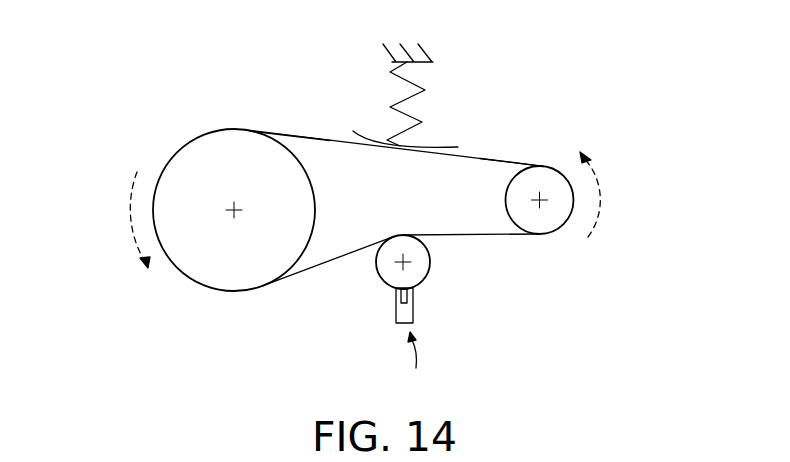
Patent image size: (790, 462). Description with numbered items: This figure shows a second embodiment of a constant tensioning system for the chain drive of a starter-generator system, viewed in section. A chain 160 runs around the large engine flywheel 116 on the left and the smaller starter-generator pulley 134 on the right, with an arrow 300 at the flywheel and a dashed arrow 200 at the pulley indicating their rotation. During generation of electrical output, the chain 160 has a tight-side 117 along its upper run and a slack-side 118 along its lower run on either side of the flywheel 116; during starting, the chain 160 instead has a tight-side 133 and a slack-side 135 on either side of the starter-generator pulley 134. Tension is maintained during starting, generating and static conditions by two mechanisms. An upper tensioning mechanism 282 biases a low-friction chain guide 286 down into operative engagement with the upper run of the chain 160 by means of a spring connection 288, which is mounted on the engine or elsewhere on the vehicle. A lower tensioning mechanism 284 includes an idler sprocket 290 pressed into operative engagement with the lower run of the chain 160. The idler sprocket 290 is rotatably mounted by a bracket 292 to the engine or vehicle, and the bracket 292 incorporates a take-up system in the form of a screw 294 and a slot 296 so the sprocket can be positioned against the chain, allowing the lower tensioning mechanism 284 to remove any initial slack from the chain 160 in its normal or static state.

The flywheel 116 is at (197, 164).
The tight-side 117 is at (290, 135).
The slack-side 118 is at (295, 283).
The chain 160 is at (338, 141).
The tight-side 133 is at (515, 236).
The starter-generator pulley 134 is at (550, 215).
The slack-side 135 is at (513, 160).
The pulley rotation direction 200 is at (608, 207).
The drive pulley rotation direction 300 is at (130, 216).
The upper tensioning mechanism 282 is at (378, 82).
The lower tensioning mechanism 284 is at (427, 366).
The low-friction chain guide 286 is at (452, 140).
The spring connection 288 is at (427, 87).
The idler sprocket 290 is at (378, 272).
The bracket 292 is at (414, 318).
The screw 294 is at (412, 258).
The slot 296 is at (414, 296).